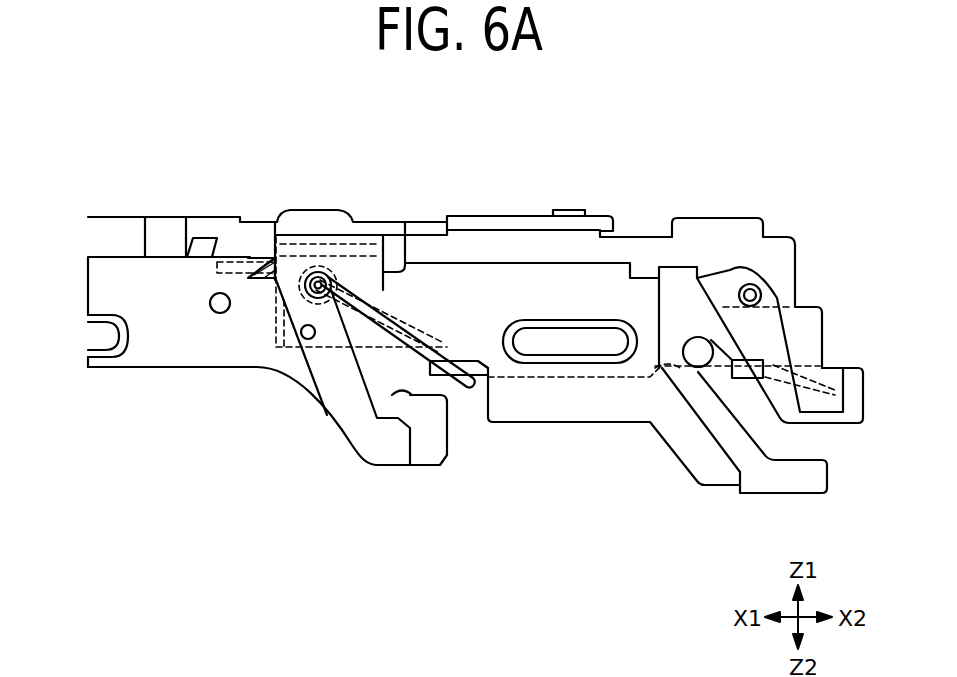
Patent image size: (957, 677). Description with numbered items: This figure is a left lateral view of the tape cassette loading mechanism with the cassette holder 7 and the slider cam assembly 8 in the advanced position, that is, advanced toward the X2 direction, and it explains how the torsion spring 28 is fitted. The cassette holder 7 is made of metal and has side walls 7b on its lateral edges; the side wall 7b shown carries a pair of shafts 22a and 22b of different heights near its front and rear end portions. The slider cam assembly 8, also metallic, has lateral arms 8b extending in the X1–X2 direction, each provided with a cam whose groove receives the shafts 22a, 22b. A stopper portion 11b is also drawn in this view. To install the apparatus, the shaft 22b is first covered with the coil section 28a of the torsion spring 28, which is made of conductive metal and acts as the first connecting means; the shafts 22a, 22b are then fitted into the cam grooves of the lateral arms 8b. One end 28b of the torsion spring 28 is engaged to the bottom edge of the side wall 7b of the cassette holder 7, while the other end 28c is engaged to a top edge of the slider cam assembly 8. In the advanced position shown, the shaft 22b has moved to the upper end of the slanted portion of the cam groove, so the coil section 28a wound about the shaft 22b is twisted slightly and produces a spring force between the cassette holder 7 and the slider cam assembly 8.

The cassette holder 7 is at (718, 215).
The side wall 7b is at (760, 232).
The slider cam assembly 8 is at (195, 213).
The lateral arm 8b is at (504, 280).
The stopper 11b is at (398, 393).
The shaft 22a is at (698, 345).
The shaft 22b is at (336, 272).
The torsion spring 28 is at (331, 303).
The coil section 28a is at (282, 350).
The one end of torsion spring 28b is at (456, 383).
The other end of torsion spring 28c is at (262, 258).